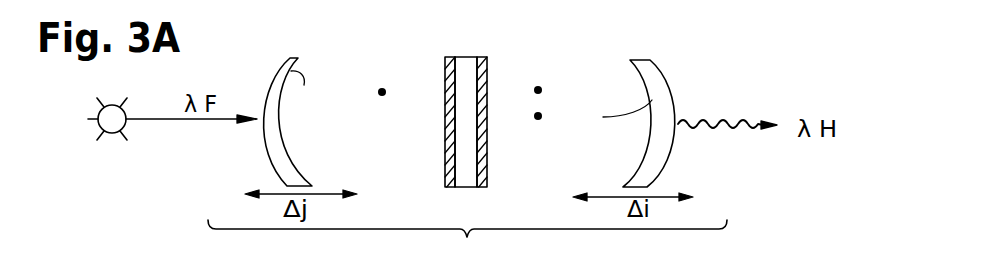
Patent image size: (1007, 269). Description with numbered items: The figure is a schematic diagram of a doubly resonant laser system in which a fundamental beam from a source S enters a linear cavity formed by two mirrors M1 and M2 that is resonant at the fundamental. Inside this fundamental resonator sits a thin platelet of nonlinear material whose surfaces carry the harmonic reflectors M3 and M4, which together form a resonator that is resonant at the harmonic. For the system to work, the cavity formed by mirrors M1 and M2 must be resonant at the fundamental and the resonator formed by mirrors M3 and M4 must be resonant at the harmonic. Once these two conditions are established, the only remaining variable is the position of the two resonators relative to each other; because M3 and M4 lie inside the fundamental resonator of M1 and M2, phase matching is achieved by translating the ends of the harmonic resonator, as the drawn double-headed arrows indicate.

The light source S is at (113, 134).
The mirror M1 is at (346, 108).
The mirror M2 is at (590, 109).
The harmonic reflector M3 is at (479, 188).
The harmonic reflector M4 is at (453, 188).